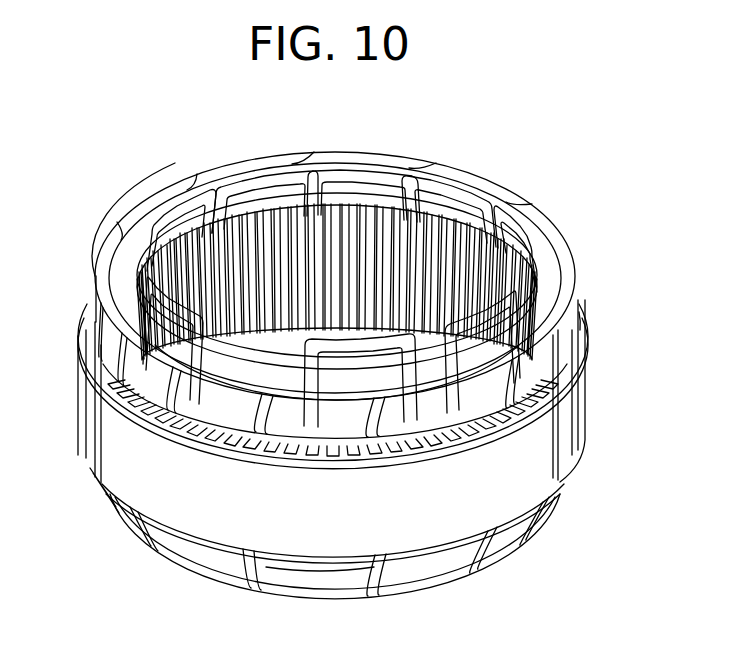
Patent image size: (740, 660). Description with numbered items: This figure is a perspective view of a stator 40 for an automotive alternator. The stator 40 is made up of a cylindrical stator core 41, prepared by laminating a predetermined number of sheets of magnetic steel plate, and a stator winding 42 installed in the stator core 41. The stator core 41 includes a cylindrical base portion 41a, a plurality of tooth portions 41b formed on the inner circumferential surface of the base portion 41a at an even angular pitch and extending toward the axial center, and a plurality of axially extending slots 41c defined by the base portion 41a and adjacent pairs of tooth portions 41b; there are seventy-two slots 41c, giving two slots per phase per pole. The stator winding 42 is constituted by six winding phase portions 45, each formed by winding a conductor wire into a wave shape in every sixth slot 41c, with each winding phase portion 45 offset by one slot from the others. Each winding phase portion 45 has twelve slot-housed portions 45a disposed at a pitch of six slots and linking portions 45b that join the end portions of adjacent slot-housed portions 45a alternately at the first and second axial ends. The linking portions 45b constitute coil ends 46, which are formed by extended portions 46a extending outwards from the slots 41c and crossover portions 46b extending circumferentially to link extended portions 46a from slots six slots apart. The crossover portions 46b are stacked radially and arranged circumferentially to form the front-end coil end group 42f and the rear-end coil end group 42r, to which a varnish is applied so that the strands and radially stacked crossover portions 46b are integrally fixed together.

The stator 40 is at (72, 178).
The stator core 41 is at (589, 396).
The base portion 41a is at (568, 346).
The tooth portions 41b is at (553, 365).
The slots 41c is at (527, 403).
The stator winding 42 is at (560, 228).
The rear-end coil end group 42r is at (90, 268).
The front-end coil end group 42f is at (97, 500).
The winding phase portions 45 is at (519, 199).
The slot-housed portions 45a is at (302, 246).
The linking portions 45b is at (287, 180).
The coil ends 46 is at (560, 157).
The extended portions 46a is at (432, 158).
The crossover portions 46b is at (478, 171).